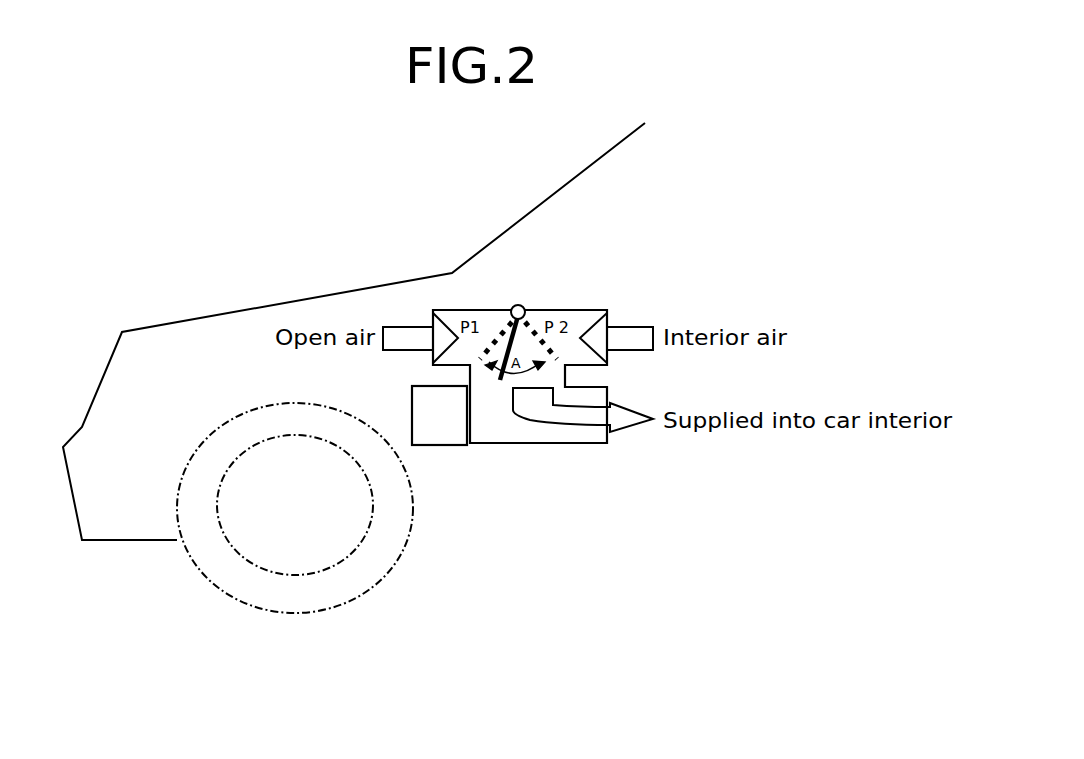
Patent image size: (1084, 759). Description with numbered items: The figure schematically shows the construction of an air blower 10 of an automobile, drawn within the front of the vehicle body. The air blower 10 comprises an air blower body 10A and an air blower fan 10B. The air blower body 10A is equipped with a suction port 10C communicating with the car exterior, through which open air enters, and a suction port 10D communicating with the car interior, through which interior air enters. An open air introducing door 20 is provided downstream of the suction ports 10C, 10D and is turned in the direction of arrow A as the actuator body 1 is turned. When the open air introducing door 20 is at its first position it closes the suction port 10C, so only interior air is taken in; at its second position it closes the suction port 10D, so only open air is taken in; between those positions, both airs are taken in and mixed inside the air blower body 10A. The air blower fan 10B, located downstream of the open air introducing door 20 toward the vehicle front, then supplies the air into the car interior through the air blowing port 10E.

The actuator body 1 is at (518, 304).
The air blower 10 is at (618, 575).
The air blower body 10A is at (525, 445).
The air blower fan 10B is at (428, 445).
The suction port 10C is at (428, 310).
The suction port 10D is at (612, 314).
The air blowing port 10E is at (612, 447).
The open air introducing door 20 is at (500, 380).